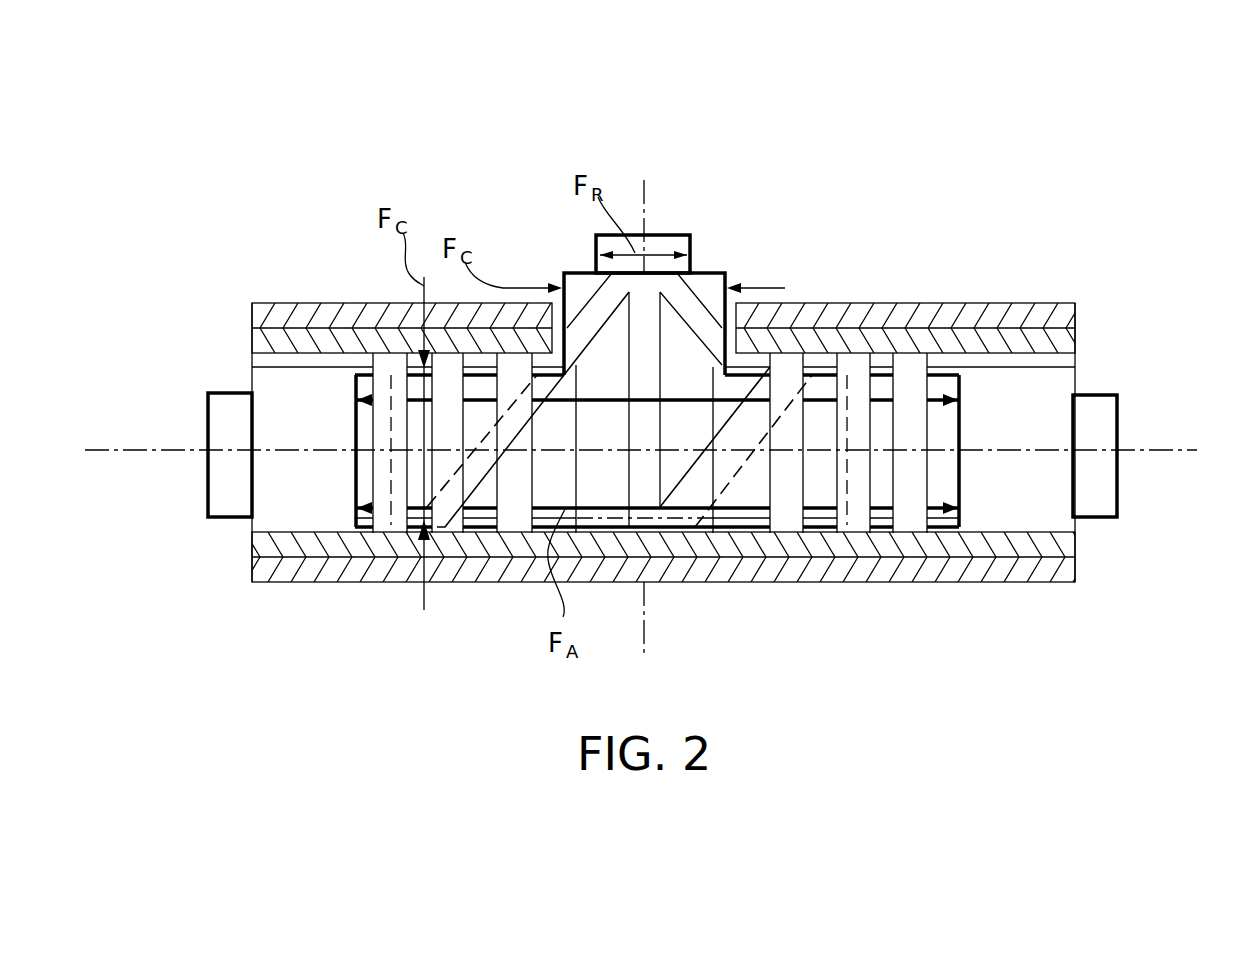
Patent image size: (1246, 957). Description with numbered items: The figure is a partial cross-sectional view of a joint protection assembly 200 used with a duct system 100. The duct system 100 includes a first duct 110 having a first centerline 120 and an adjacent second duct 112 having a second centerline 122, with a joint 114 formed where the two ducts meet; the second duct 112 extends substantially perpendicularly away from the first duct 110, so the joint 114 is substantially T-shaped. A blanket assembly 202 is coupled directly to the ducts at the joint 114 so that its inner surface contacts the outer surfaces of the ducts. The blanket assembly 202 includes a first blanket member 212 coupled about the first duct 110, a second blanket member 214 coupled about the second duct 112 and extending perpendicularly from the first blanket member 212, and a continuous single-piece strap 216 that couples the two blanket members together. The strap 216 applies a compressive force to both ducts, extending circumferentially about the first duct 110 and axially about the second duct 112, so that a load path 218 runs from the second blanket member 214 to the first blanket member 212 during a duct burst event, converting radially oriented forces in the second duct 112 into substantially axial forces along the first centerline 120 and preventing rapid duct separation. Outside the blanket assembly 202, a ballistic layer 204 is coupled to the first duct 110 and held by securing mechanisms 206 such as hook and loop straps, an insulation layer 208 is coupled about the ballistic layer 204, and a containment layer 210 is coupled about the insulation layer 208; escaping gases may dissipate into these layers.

The duct system 100 is at (297, 144).
The joint protection assembly 200 is at (197, 241).
The blanket assembly 202 is at (533, 262).
The containment layer 210 is at (303, 307).
The insulation layer 208 is at (360, 547).
The ballistic layer 204 is at (298, 510).
The securing mechanisms 206 is at (853, 525).
The first blanket member 212 is at (948, 528).
The strap 216 is at (670, 490).
The load path 218 is at (882, 399).
The second blanket member 214 is at (727, 277).
The joint 114 is at (747, 345).
The second duct 112 is at (687, 217).
The second centerline 122 is at (647, 193).
The first duct 110 is at (1095, 517).
The first centerline 120 is at (1162, 450).